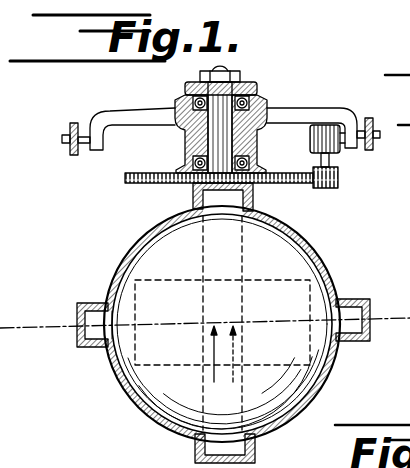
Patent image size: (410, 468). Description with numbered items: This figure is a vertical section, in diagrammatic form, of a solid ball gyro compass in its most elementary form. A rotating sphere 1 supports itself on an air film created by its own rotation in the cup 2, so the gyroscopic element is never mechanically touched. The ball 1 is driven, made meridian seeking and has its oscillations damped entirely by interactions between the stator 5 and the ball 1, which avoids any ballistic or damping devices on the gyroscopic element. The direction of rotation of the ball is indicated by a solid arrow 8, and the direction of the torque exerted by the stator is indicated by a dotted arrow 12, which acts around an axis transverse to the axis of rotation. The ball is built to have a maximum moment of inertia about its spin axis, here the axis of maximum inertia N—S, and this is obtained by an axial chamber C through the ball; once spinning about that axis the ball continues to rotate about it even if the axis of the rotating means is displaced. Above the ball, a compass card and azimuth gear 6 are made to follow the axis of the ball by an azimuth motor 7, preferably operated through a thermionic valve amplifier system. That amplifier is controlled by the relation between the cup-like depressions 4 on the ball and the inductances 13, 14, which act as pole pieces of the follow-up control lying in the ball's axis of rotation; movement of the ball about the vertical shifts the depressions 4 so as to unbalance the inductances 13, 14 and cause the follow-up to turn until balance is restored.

The rotating sphere 1 is at (223, 321).
The cup 2 is at (151, 419).
The cup-like depression 4 is at (120, 322).
The stator 5 is at (232, 201).
The azimuth gear 6 is at (126, 184).
The azimuth motor 7 is at (318, 142).
The solid arrow 8 is at (212, 352).
The dotted arrow 12 is at (254, 354).
The inductance 13 is at (93, 308).
The inductance 14 is at (352, 308).
The axial chamber C is at (262, 319).
The north end of axis N—S N is at (37, 326).
The south end of axis N— S is at (394, 320).